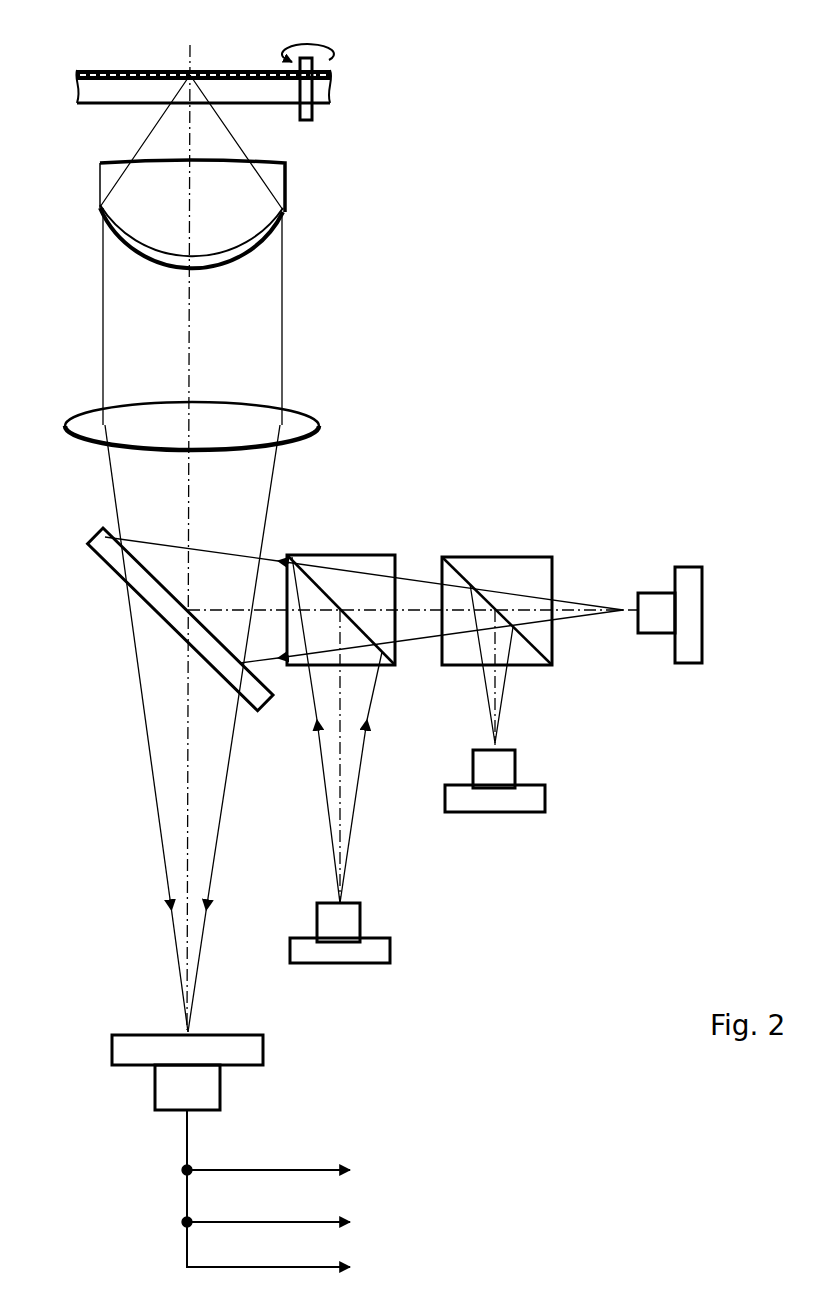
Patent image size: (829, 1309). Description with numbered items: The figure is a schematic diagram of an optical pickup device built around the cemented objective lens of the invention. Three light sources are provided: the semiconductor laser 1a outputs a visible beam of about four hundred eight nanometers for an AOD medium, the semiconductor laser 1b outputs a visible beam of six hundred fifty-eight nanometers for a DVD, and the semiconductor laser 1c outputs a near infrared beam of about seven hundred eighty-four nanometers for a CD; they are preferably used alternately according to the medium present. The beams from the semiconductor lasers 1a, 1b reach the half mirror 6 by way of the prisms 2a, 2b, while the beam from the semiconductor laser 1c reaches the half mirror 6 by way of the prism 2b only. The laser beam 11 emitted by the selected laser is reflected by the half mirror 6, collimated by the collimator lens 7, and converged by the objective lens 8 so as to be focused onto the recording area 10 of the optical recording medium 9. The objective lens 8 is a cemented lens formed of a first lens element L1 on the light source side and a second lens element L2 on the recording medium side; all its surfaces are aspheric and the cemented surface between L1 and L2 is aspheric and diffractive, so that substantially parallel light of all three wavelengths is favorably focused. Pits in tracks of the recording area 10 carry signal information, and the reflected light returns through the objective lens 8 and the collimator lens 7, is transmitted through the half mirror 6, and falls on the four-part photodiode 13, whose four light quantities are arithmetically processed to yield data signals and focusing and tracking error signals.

The recording area 10 is at (107, 71).
The optical recording medium 9 is at (348, 141).
The objective lens 8 is at (324, 214).
The second lens element L2 is at (107, 182).
The first lens element L1 is at (130, 230).
The collimator lens 7 is at (302, 422).
The half mirror 6 is at (105, 550).
The laser beam 11 is at (276, 557).
The prism 2b is at (377, 562).
The prism 2a is at (517, 565).
The semiconductor laser 1a is at (657, 592).
The semiconductor laser 1b is at (517, 763).
The semiconductor laser 1c is at (360, 920).
The four-part photodiode 13 is at (263, 1050).